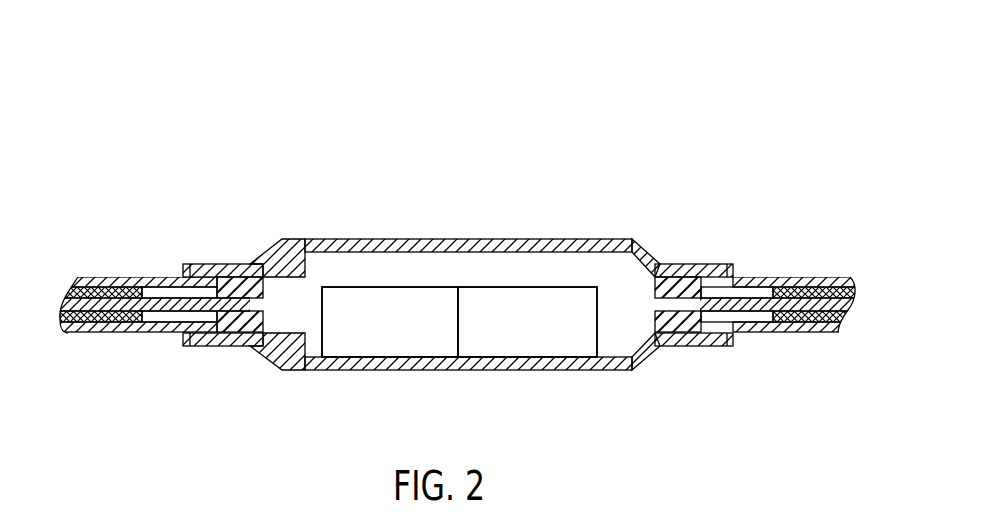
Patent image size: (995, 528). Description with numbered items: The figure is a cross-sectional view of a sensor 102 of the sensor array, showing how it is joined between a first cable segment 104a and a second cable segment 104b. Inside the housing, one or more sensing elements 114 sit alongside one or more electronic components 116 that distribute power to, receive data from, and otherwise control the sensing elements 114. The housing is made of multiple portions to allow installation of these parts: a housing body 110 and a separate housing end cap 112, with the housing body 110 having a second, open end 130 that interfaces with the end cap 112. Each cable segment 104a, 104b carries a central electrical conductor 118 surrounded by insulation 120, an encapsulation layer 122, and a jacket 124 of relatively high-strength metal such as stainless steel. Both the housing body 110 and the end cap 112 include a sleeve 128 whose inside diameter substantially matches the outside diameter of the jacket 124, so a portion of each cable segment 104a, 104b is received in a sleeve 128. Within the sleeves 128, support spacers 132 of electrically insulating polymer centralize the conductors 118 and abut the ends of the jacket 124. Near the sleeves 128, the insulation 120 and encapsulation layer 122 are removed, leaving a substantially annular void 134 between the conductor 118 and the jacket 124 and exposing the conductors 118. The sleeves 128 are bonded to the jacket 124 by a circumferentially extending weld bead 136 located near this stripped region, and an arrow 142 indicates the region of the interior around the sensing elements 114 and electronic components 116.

The sensor 102 is at (450, 228).
The first cable segment 104a is at (128, 287).
The second cable segment 104b is at (858, 318).
The housing body 110 is at (461, 312).
The housing end cap 112 is at (280, 347).
The sensing element 114 is at (378, 347).
The electronic component 116 is at (573, 353).
The central electrical conductor 118 is at (160, 305).
The insulation 120 is at (105, 318).
The encapsulation layer 122 is at (67, 330).
The jacket 124 is at (117, 287).
The sleeve 128 is at (203, 337).
The second, open end 130 is at (328, 248).
The support spacer 132 is at (243, 323).
The void 134 is at (197, 293).
The weld bead 136 is at (184, 271).
The gap 142 is at (467, 280).